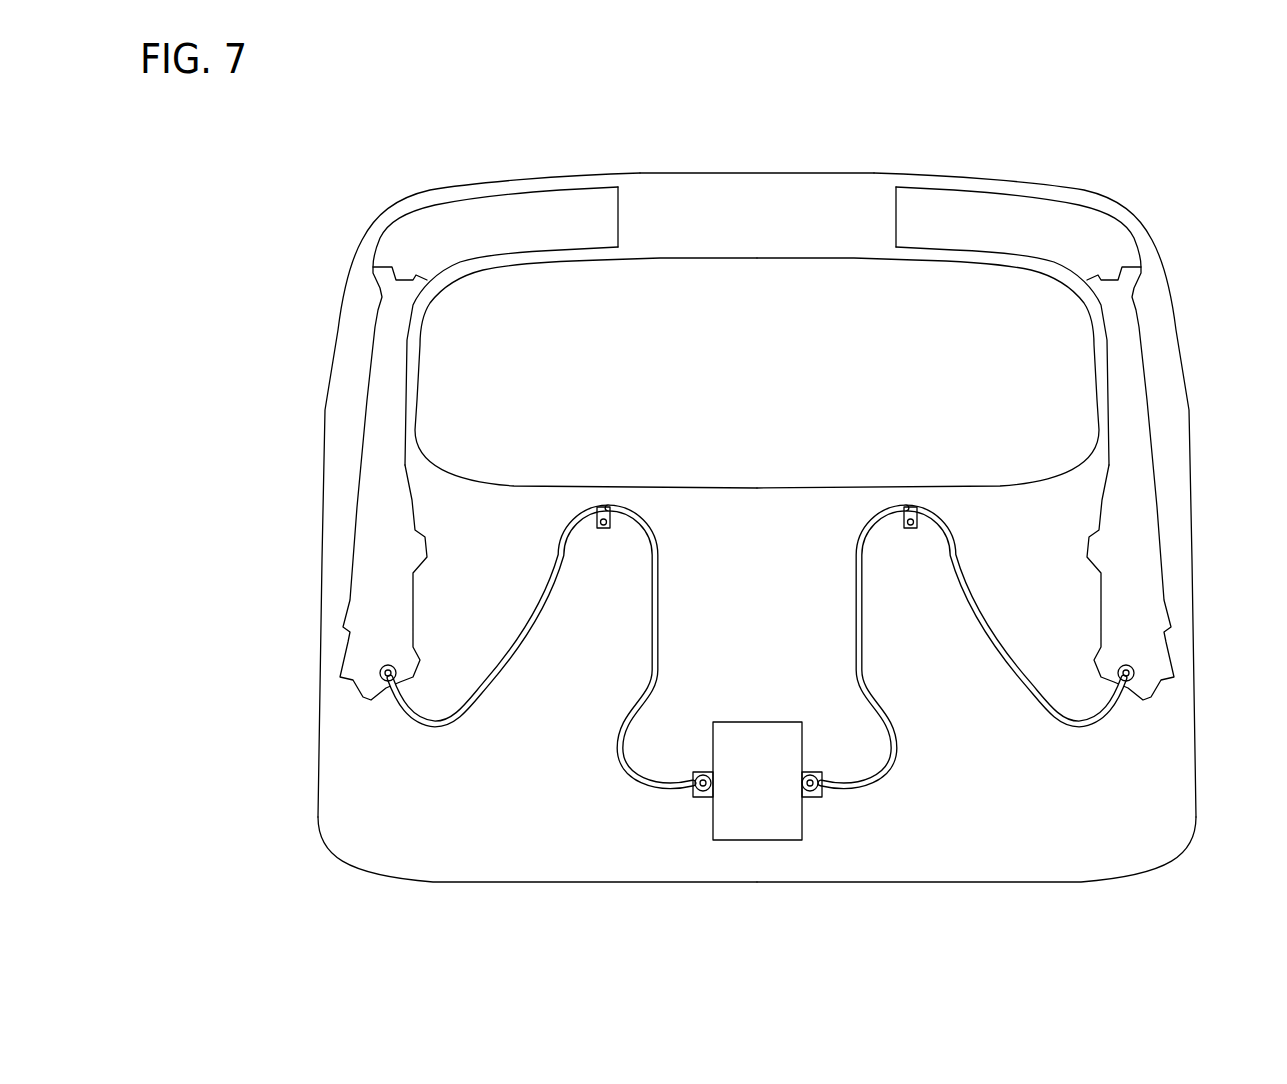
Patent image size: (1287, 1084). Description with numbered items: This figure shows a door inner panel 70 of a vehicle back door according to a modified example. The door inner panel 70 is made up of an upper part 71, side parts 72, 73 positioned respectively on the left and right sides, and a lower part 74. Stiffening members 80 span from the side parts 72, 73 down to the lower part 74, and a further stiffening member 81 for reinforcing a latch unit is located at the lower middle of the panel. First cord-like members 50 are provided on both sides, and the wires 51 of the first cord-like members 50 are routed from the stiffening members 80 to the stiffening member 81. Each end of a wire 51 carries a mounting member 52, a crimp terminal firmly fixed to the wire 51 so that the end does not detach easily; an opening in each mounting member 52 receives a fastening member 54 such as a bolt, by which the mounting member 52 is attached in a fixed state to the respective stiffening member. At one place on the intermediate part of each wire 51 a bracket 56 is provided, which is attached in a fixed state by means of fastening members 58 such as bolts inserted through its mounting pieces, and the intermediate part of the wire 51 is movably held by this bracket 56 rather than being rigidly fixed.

The first cord-like member 50 is at (473, 733).
The wire 51 is at (625, 775).
The mounting member 52 is at (378, 672).
The fastening member 54 is at (413, 663).
The bracket 56 is at (603, 507).
The fastening member 58 is at (593, 520).
The door inner panel 70 is at (306, 808).
The upper part 71 is at (808, 202).
The side part 72 is at (338, 442).
The side part 73 is at (1158, 398).
The lower part 74 is at (573, 783).
The stiffening member 80 is at (382, 618).
The stiffening member 81 is at (773, 830).